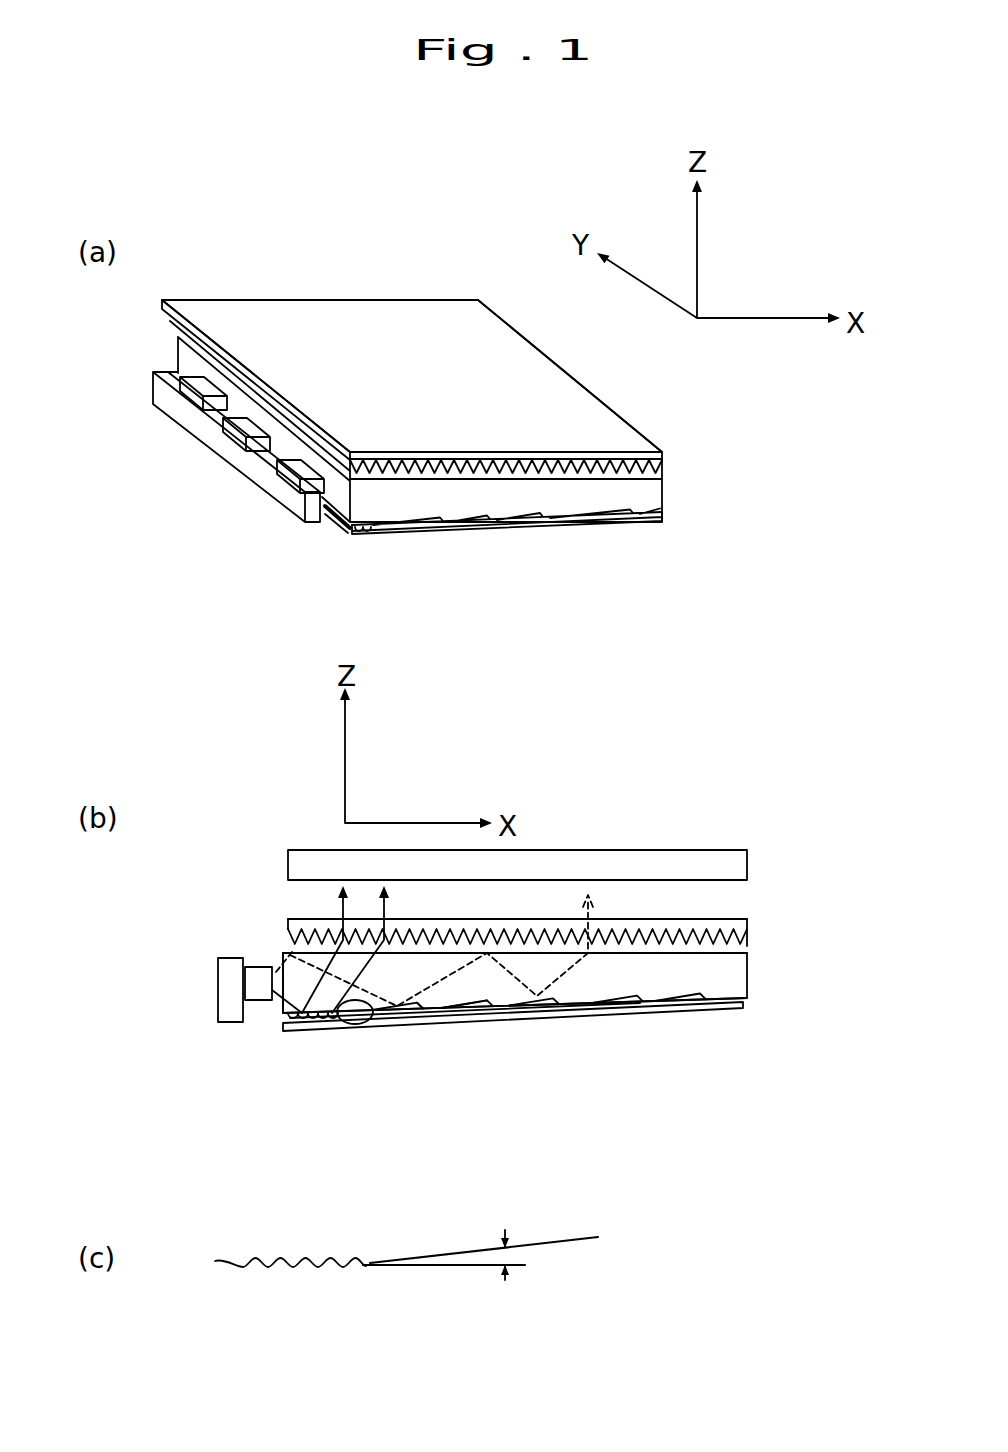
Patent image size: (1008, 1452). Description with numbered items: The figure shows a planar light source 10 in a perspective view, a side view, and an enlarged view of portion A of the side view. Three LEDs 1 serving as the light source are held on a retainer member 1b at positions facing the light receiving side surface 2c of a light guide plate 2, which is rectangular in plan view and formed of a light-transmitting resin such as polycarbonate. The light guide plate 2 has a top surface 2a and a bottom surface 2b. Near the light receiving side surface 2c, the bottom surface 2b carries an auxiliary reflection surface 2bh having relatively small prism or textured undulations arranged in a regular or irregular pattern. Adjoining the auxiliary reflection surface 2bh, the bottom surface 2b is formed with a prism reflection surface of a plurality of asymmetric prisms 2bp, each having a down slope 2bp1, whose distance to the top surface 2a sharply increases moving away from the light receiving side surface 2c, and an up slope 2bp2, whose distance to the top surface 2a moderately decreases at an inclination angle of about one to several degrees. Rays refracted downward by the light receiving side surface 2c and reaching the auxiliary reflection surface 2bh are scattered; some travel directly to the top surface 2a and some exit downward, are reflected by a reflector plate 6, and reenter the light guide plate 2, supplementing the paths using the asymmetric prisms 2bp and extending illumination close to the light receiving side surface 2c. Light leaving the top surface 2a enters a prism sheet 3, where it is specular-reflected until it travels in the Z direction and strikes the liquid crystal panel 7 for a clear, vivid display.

The planar light source 10 is at (401, 265).
The LEDs 1 is at (217, 430).
The retainer member 1b is at (263, 468).
The light guide plate 2 is at (652, 500).
The top surface 2a is at (665, 471).
The bottom surface 2b is at (502, 523).
The auxiliary reflection surface 2bh is at (372, 527).
The asymmetric prisms 2bp is at (548, 1066).
The down slope 2bp1 is at (473, 1022).
The up slope 2bp2 is at (445, 1022).
The light receiving side surface 2c is at (327, 526).
The prism sheet 3 is at (543, 388).
The reflector plate 6 is at (597, 522).
The liquid crystal panel 7 is at (700, 850).
The portion A is at (332, 1010).